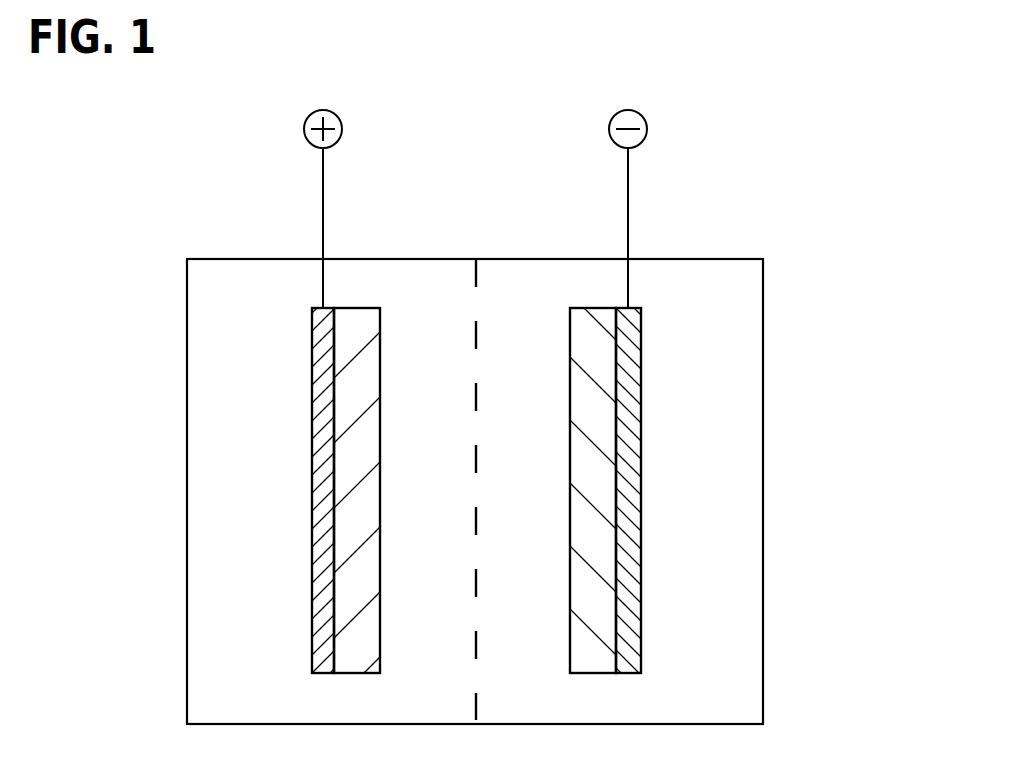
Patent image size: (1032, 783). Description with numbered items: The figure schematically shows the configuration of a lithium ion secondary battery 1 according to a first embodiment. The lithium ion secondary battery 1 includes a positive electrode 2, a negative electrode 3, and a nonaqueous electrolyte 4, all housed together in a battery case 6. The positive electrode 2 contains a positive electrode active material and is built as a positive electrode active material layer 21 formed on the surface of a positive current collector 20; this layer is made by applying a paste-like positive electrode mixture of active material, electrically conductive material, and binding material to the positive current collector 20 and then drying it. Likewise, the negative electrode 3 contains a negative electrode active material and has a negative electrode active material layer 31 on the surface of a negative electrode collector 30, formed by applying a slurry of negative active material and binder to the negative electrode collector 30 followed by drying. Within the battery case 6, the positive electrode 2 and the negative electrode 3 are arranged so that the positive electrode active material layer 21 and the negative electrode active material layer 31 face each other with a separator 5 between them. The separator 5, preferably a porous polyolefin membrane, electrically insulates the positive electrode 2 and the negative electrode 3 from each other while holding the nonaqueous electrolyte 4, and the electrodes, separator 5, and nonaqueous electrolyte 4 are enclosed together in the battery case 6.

The lithium ion secondary battery 1 is at (208, 172).
The positive electrode 2 is at (83, 448).
The positive current collector 20 is at (328, 553).
The positive electrode active material layer 21 is at (355, 490).
The negative electrode 3 is at (868, 450).
The negative electrode collector 30 is at (632, 542).
The negative electrode active material layer 31 is at (598, 472).
The nonaqueous electrolyte 4 is at (525, 312).
The separator 5 is at (477, 283).
The battery case 6 is at (763, 283).